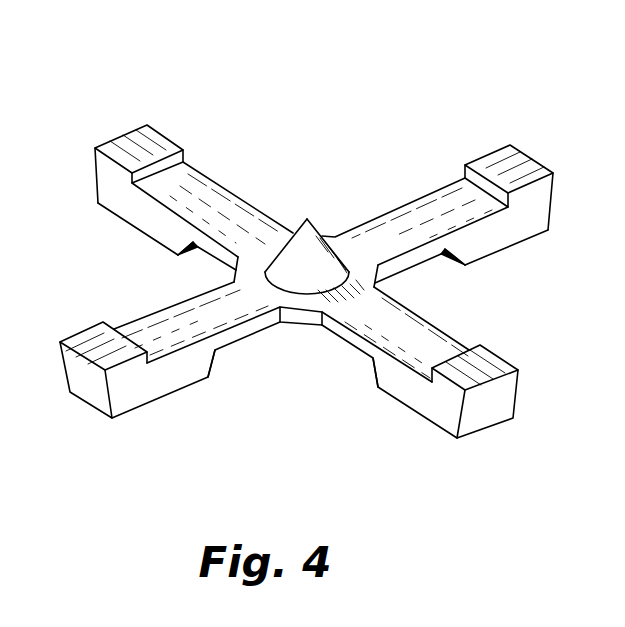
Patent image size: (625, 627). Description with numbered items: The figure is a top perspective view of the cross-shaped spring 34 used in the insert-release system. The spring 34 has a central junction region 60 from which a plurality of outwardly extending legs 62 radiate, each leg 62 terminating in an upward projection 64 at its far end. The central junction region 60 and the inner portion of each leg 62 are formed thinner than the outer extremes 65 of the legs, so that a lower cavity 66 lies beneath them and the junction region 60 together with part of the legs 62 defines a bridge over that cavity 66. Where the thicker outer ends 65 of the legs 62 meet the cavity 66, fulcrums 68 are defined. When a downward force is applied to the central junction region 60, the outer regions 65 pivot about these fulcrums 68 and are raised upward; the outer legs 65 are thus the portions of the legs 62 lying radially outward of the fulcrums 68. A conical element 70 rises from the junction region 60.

The cross-shaped spring 34 is at (127, 89).
The central junction region 60 is at (300, 326).
The outwardly extending leg 62 is at (423, 422).
The upward projection 64 is at (504, 355).
The outer extreme of the leg 65 is at (115, 440).
The lower cavity 66 is at (213, 266).
The fulcrum 68 is at (464, 268).
The cone 70 is at (316, 221).